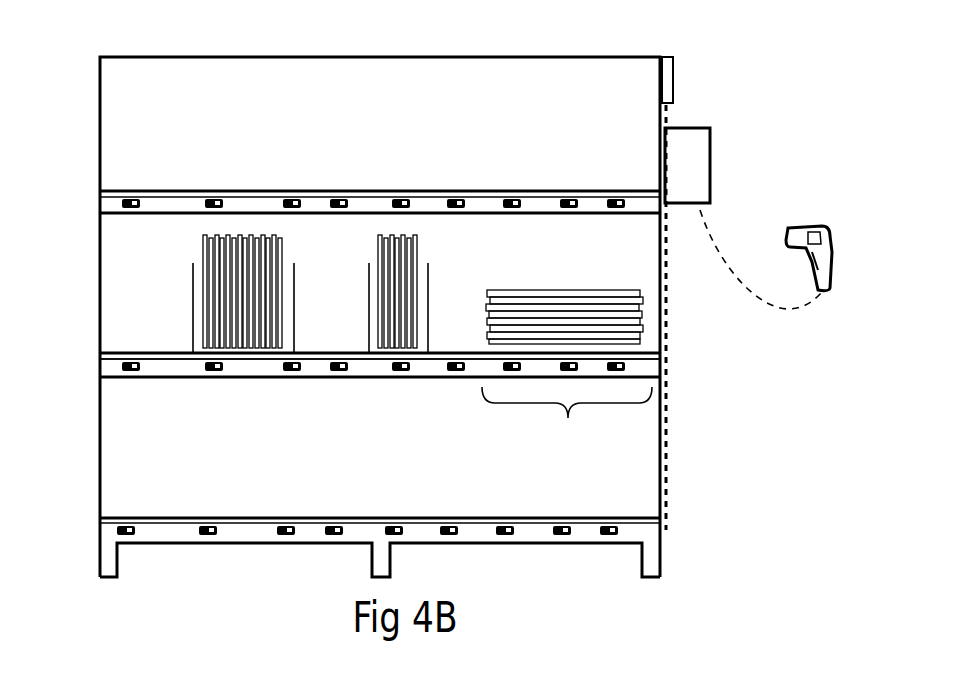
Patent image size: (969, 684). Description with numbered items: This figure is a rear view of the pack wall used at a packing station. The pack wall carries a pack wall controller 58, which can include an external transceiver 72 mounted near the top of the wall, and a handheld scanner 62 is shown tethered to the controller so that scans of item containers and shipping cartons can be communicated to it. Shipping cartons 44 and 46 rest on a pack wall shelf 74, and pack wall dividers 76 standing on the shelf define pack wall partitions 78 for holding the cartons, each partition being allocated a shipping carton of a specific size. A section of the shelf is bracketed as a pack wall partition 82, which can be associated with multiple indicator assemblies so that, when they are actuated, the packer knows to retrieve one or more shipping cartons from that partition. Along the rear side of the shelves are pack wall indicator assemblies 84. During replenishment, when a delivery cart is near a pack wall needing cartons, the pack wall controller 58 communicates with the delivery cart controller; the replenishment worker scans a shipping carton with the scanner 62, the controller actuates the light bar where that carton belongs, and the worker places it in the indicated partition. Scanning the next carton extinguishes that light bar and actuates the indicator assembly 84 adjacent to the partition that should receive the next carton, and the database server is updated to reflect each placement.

The external transceiver 72 is at (675, 72).
The pack wall controller 58 is at (708, 197).
The scanner 62 is at (820, 227).
The shipping carton 46 is at (422, 245).
The shipping carton 44 is at (605, 290).
The pack wall partition 78 is at (358, 246).
The pack wall divider 76 is at (369, 303).
The pack wall shelf 74 is at (98, 355).
The pack wall indicator assembly 84 is at (98, 368).
The pack wall partition 82 is at (567, 415).